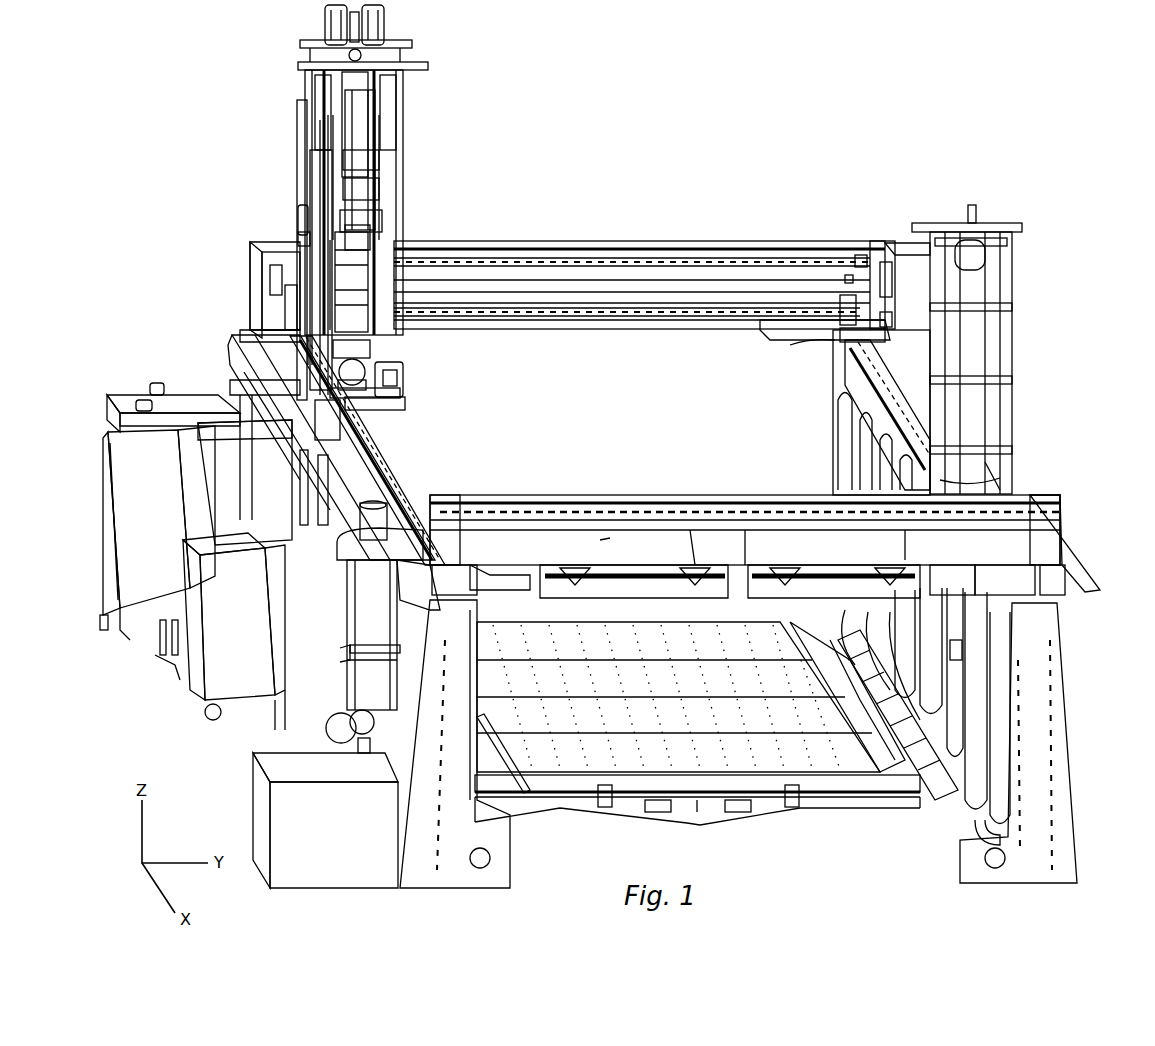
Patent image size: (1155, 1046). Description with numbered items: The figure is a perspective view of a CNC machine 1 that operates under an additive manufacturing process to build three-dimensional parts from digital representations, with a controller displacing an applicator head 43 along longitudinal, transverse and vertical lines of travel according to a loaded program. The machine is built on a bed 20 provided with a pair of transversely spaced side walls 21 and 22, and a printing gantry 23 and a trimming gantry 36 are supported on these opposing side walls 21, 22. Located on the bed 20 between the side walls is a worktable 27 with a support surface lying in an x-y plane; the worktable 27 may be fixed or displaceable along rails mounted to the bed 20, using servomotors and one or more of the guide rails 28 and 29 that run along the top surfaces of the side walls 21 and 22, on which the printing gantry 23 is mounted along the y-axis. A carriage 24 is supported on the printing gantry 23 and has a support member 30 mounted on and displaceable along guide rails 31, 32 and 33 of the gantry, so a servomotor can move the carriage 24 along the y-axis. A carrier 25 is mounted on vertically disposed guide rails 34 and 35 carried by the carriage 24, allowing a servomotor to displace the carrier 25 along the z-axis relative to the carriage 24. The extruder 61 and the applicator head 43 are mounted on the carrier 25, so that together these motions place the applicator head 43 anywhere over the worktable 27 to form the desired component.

The CNC machine 1 is at (1002, 128).
The bed 20 is at (630, 800).
The side wall 21 is at (468, 730).
The side wall 22 is at (1060, 740).
The printing gantry 23 is at (830, 235).
The carriage 24 is at (300, 200).
The carrier 25 is at (412, 130).
The worktable 27 is at (648, 708).
The guide rail 28 is at (395, 470).
The guide rail 29 is at (850, 365).
The support member 30 is at (297, 225).
The guide rail 31 is at (676, 240).
The guide rail 32 is at (600, 242).
The guide rail 33 is at (640, 312).
The guide rail 34 is at (310, 168).
The guide rail 35 is at (378, 330).
The trimming gantry 36 is at (1015, 490).
The applicator head 43 is at (373, 410).
The extruder 61 is at (370, 238).